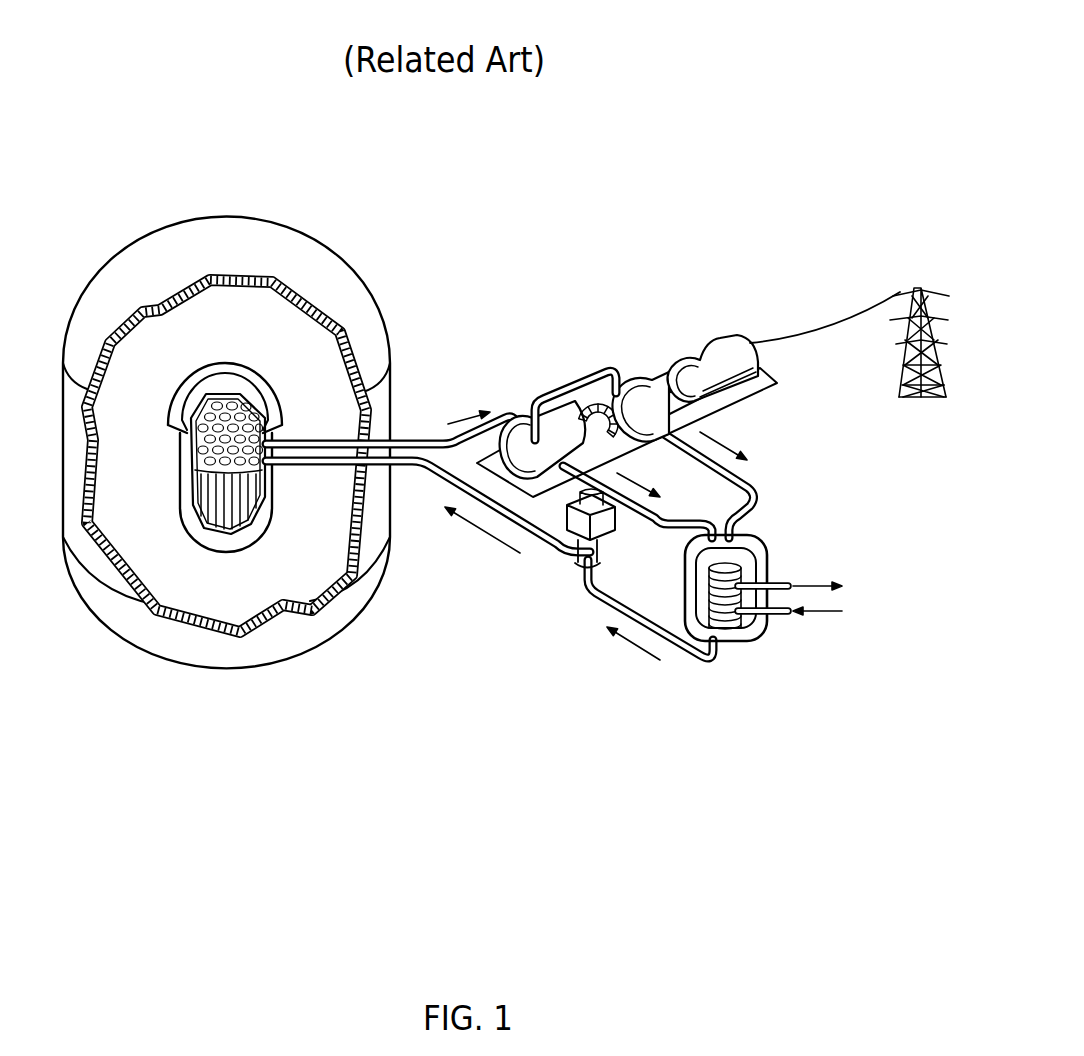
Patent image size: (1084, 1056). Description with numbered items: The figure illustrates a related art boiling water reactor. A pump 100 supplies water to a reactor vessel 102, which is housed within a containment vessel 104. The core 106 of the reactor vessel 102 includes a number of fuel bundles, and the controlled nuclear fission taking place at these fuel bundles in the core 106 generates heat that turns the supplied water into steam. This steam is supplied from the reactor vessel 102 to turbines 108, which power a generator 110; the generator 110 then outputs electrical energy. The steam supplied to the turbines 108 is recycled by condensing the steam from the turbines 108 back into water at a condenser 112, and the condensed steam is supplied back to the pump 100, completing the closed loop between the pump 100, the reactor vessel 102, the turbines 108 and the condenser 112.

The pump 100 is at (614, 522).
The reactor vessel 102 is at (227, 380).
The containment vessel 104 is at (140, 642).
The core 106 is at (227, 498).
The turbines 108 is at (640, 400).
The generator 110 is at (707, 357).
The condenser 112 is at (758, 632).